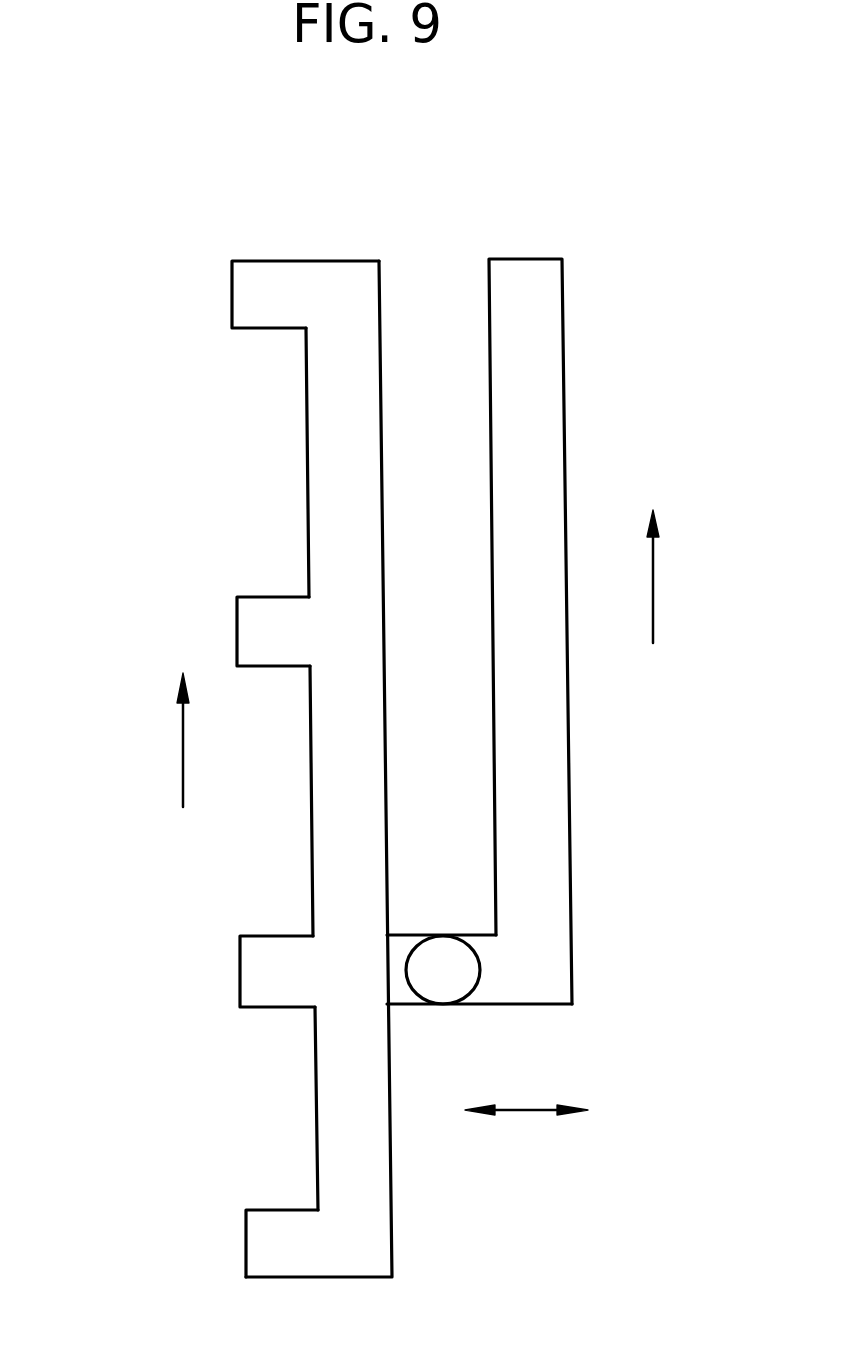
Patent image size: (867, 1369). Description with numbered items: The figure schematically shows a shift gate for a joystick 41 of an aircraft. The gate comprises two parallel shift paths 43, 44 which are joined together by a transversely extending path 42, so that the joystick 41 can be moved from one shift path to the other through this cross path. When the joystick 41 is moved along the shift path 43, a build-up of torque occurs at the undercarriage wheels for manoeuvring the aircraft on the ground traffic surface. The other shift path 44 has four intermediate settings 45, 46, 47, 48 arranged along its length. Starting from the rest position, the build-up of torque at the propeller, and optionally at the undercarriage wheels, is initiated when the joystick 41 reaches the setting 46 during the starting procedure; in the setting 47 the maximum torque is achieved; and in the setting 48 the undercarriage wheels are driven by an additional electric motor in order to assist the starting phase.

The joystick 41 is at (462, 965).
The transversely extending path 42 is at (524, 980).
The shift path 43 is at (537, 698).
The shift path 44 is at (348, 813).
The intermediate setting 45 is at (275, 1247).
The intermediate setting 46 is at (270, 974).
The intermediate setting 47 is at (270, 633).
The intermediate setting 48 is at (285, 297).